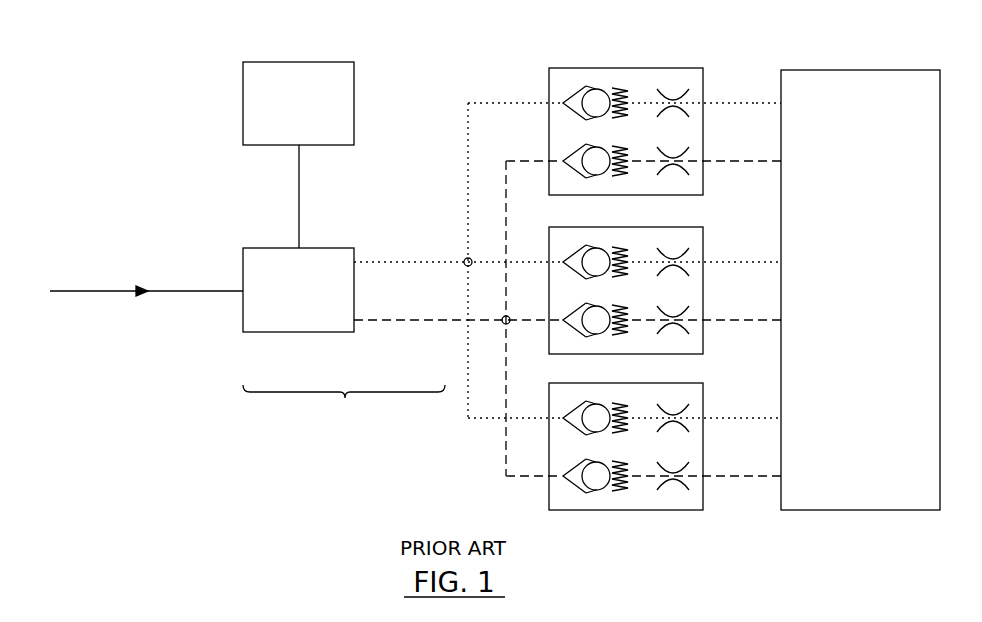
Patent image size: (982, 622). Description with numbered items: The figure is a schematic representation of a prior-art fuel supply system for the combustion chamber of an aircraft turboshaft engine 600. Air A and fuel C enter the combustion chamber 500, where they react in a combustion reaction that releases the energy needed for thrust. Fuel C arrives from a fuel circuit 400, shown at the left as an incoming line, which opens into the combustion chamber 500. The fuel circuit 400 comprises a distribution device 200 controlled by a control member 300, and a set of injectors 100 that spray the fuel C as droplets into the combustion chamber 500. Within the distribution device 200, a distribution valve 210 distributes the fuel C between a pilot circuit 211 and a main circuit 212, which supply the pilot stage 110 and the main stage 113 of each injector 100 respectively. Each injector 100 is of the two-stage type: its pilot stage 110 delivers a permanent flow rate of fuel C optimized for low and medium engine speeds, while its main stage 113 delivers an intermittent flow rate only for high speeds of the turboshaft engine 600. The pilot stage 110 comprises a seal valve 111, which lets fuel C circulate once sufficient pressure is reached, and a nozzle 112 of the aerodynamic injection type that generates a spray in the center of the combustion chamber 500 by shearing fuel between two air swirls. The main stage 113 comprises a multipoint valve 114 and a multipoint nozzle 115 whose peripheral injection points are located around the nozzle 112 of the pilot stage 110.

The turboshaft engine 600 is at (112, 74).
The fuel circuit 400 is at (60, 284).
The control member 300 is at (284, 113).
The distribution device 200 is at (402, 289).
The distribution valve 210 is at (284, 300).
The pilot circuit 211 is at (381, 264).
The main circuit 212 is at (425, 322).
The injector 100 is at (611, 290).
The seal valve 111 is at (595, 88).
The nozzle 112 is at (675, 98).
The multipoint valve 114 is at (592, 195).
The multipoint nozzle 115 is at (670, 195).
The pilot stage 110 is at (758, 101).
The main stage 113 is at (752, 163).
The combustion chamber 500 is at (845, 302).